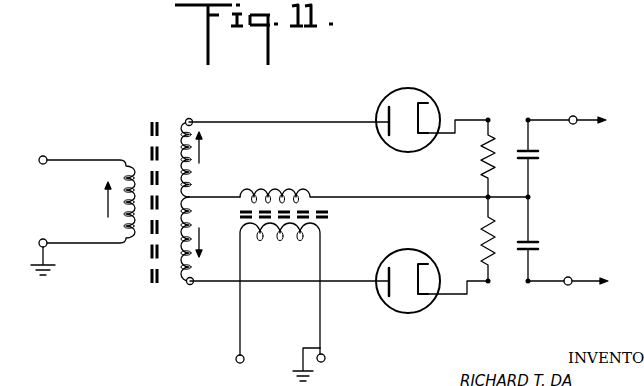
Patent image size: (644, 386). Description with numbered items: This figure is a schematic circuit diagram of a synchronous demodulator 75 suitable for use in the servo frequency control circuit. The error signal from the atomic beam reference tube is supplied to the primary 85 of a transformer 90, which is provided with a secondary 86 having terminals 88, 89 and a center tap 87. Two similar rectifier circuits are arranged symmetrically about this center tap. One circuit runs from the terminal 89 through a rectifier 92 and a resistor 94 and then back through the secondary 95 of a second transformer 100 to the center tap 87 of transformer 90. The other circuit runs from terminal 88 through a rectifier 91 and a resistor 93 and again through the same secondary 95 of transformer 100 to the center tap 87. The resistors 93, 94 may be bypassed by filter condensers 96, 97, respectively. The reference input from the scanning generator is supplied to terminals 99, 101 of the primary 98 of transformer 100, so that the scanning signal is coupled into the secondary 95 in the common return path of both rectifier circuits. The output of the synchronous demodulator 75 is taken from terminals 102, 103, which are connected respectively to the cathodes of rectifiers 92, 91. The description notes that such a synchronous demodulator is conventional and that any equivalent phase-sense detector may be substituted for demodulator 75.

The synchronous demodulator 75 is at (312, 115).
The primary 85 is at (110, 159).
The secondary 86 is at (187, 167).
The center tap 87 is at (189, 197).
The terminal 88 is at (189, 286).
The terminal 89 is at (189, 118).
The transformer 90 is at (157, 108).
The rectifier 91 is at (426, 312).
The rectifier 92 is at (416, 90).
The resistor 93 is at (482, 242).
The resistor 94 is at (484, 157).
The secondary 95 is at (303, 191).
The filter condenser 96 is at (538, 246).
The filter condenser 97 is at (538, 155).
The primary 98 is at (275, 235).
The terminal 99 is at (241, 365).
The second transformer 100 is at (331, 214).
The terminal 101 is at (323, 364).
The terminal 102 is at (576, 116).
The terminal 103 is at (569, 286).